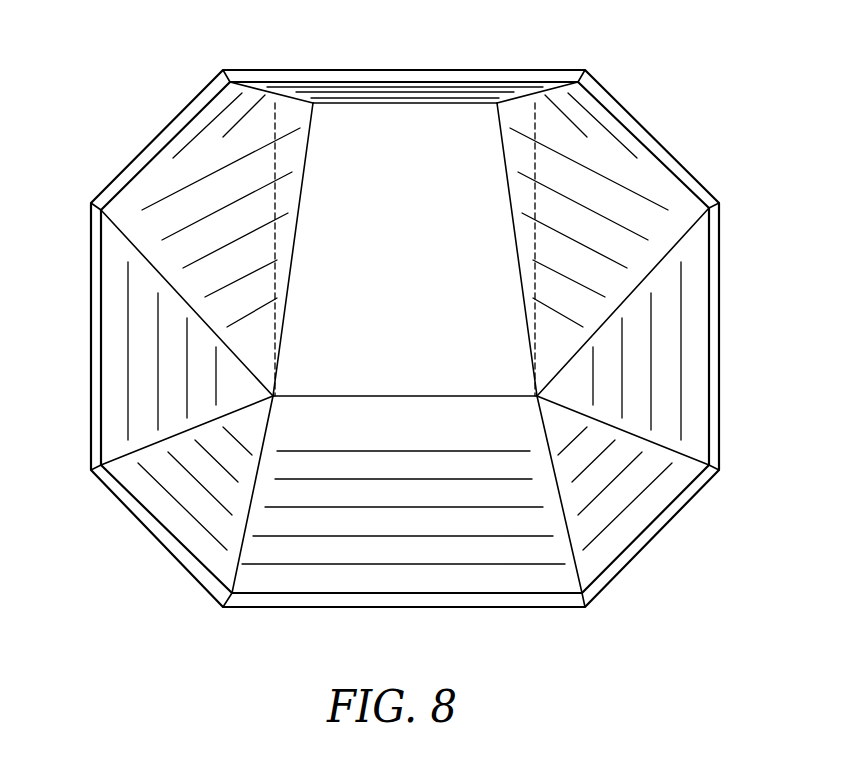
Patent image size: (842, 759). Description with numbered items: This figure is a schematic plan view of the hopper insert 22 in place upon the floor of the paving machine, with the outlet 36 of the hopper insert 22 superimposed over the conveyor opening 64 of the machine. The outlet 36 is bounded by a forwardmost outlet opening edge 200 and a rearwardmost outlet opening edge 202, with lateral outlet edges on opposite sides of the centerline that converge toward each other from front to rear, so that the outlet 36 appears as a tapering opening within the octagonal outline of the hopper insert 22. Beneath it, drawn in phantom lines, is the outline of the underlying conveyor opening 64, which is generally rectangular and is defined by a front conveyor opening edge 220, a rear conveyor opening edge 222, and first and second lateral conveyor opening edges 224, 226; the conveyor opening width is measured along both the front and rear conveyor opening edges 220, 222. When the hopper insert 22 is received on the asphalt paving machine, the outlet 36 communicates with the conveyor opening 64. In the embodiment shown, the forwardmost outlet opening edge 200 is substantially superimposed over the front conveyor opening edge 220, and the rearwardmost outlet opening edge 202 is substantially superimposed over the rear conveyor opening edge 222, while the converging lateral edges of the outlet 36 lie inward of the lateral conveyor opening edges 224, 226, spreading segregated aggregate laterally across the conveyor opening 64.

The hopper insert 22 is at (150, 136).
The outlet 36 is at (517, 238).
The conveyor opening 64 is at (665, 249).
The first lateral conveyor opening edge 224 is at (537, 212).
The forwardmost outlet opening edge 200 is at (355, 395).
The rearwardmost outlet opening edge 202 is at (378, 104).
The front conveyor opening edge 220 is at (403, 397).
The rear conveyor opening edge 222 is at (413, 97).
The second lateral conveyor opening edge 226 is at (277, 237).